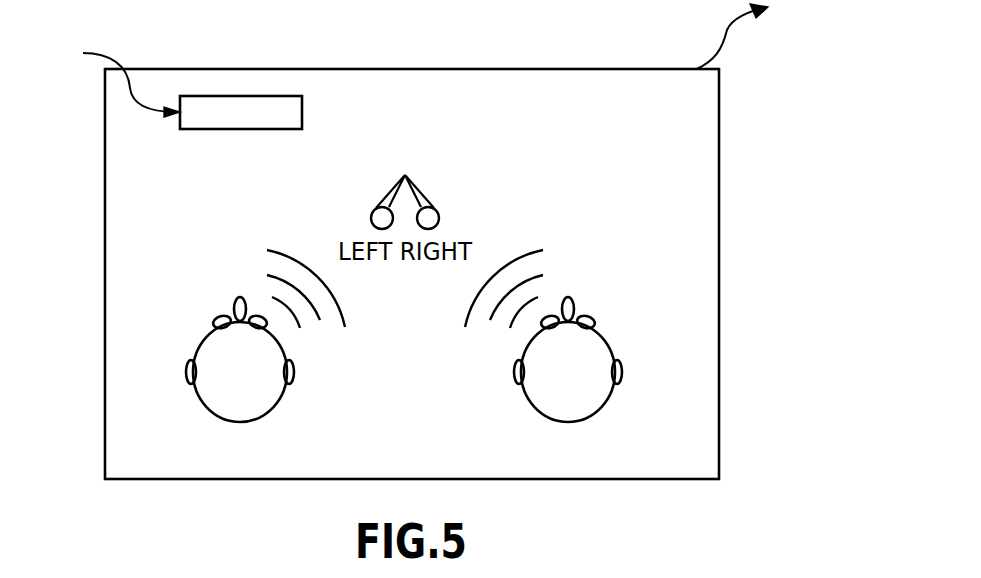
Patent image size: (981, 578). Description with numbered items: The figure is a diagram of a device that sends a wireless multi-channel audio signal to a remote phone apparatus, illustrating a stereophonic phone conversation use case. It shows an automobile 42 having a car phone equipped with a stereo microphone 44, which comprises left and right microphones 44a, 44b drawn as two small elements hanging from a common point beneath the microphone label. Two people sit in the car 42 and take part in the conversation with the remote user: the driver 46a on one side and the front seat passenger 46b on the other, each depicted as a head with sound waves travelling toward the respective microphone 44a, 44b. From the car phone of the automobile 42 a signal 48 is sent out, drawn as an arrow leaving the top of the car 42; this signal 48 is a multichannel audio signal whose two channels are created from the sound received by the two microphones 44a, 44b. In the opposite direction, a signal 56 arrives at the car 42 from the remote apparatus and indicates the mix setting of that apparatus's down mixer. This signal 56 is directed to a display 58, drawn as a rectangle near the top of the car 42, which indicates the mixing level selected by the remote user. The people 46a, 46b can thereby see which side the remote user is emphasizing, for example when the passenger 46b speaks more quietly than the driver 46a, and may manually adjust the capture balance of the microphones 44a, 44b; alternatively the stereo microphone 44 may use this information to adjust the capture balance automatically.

The automobile 42 is at (719, 125).
The stereo microphone 44 is at (427, 178).
The left microphone 44a is at (371, 214).
The right microphone 44b is at (439, 214).
The driver 46a is at (215, 352).
The front seat passenger 46b is at (592, 345).
The signal 48 is at (728, 30).
The signal 56 is at (131, 93).
The display 58 is at (264, 96).